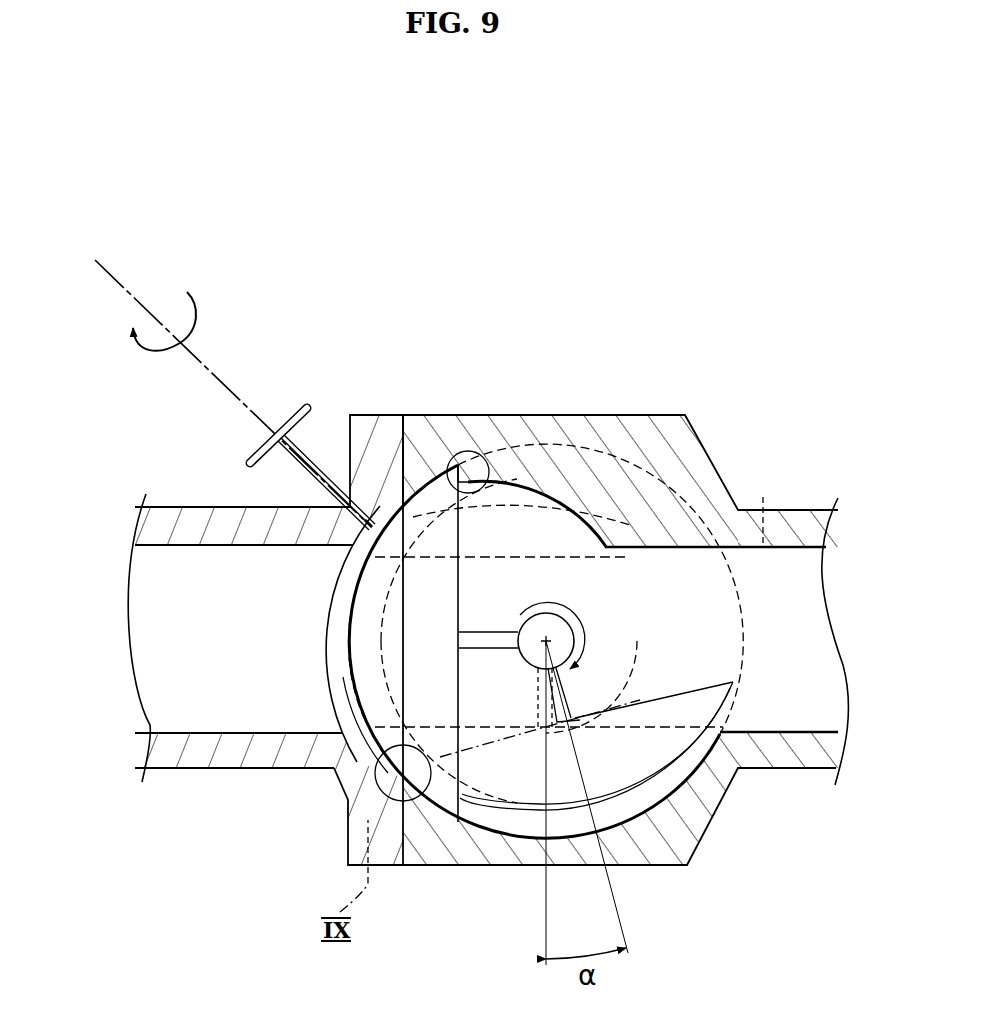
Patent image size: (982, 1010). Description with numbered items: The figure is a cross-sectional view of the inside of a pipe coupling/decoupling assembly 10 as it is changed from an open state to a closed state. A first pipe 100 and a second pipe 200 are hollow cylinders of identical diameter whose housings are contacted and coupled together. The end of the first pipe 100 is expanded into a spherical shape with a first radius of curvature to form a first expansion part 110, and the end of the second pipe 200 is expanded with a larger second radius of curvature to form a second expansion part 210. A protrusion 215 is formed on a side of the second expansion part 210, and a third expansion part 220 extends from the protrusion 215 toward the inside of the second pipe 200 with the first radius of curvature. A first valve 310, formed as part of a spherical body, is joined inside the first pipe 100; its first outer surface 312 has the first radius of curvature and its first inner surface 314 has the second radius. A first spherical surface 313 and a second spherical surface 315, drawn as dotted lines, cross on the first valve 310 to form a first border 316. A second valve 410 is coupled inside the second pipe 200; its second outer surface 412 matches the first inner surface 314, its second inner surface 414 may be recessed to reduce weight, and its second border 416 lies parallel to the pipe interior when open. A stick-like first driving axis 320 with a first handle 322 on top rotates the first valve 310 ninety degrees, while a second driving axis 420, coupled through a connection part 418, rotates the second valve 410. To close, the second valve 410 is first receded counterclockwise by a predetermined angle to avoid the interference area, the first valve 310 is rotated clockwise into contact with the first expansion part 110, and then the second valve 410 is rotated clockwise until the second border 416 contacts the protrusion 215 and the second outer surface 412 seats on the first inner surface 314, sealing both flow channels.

The valve assembly 10 is at (62, 126).
The first pipe 100 is at (186, 505).
The first expansion part 110 is at (404, 415).
The second pipe 200 is at (776, 770).
The second expansion part 210 is at (460, 822).
The protrusion 215 is at (466, 451).
The third expansion part 220 is at (537, 490).
The first valve 310 is at (326, 632).
The first outer surface 312 is at (338, 583).
The first spherical surface 313 is at (625, 573).
The first inner surface 314 is at (355, 667).
The second spherical surface 315 is at (763, 497).
The first border 316 is at (398, 786).
The first driving axis 320 is at (309, 447).
The first handle 322 is at (298, 410).
The second valve 410 is at (466, 577).
The second outer surface 412 is at (329, 710).
The second inner surface 414 is at (383, 590).
The second border 416 is at (465, 760).
The connection part 418 is at (487, 649).
The second driving axis 420 is at (583, 625).